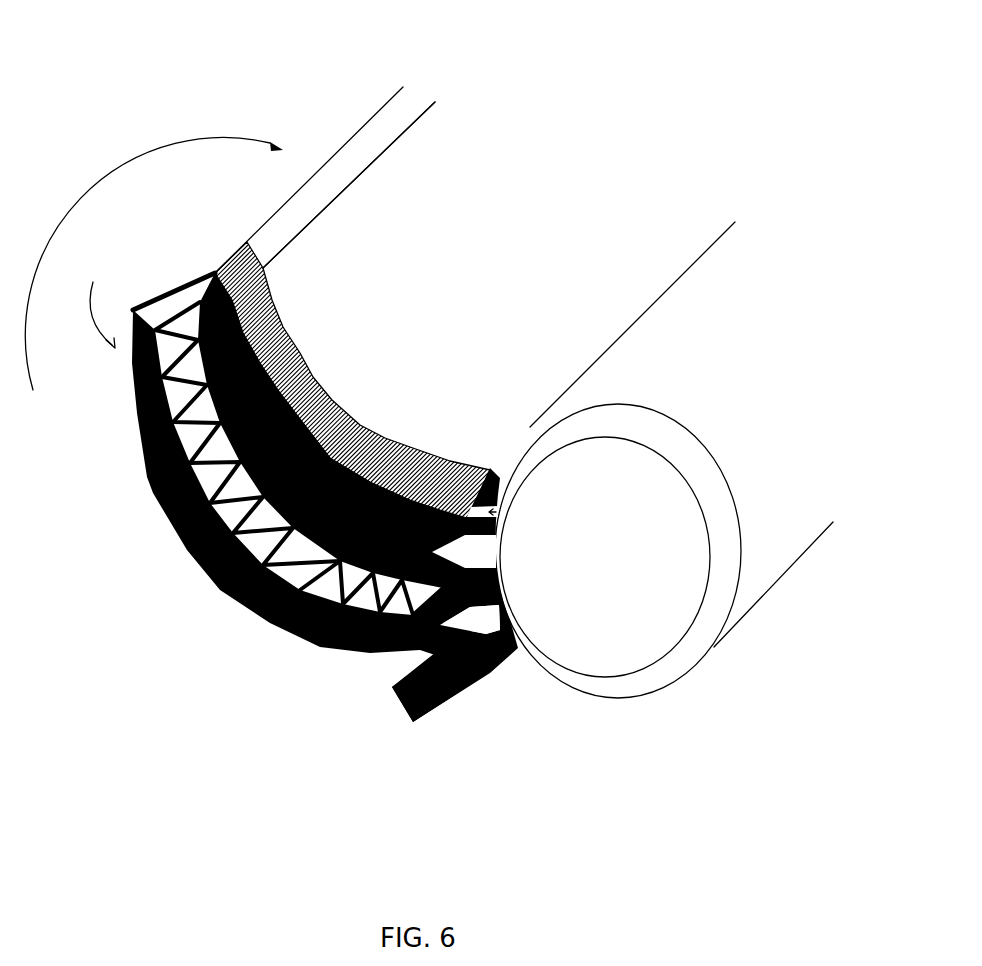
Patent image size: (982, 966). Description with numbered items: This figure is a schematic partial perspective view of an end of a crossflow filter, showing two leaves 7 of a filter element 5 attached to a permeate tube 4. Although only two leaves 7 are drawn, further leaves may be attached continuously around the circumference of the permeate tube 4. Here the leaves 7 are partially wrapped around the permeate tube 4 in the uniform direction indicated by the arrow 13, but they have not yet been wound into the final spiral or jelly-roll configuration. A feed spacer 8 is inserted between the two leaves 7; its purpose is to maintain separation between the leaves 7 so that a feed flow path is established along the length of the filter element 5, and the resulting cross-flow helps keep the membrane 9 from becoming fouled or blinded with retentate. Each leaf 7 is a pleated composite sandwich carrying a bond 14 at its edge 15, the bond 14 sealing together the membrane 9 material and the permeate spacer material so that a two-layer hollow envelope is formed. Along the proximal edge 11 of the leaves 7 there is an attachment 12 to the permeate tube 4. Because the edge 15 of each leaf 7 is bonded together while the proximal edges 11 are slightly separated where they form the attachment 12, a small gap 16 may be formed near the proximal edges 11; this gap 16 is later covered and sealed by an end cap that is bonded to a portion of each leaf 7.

The permeate tube 4 is at (762, 540).
The filter element 5 is at (102, 302).
The leaf 7 is at (484, 167).
The feed spacer 8 is at (190, 281).
The membrane 9 is at (412, 256).
The proximal edge 11 is at (492, 512).
The attachment 12 is at (499, 580).
The arrow 13 is at (180, 130).
The bond 14 is at (388, 447).
The edge 15 is at (248, 623).
The gap 16 is at (465, 617).